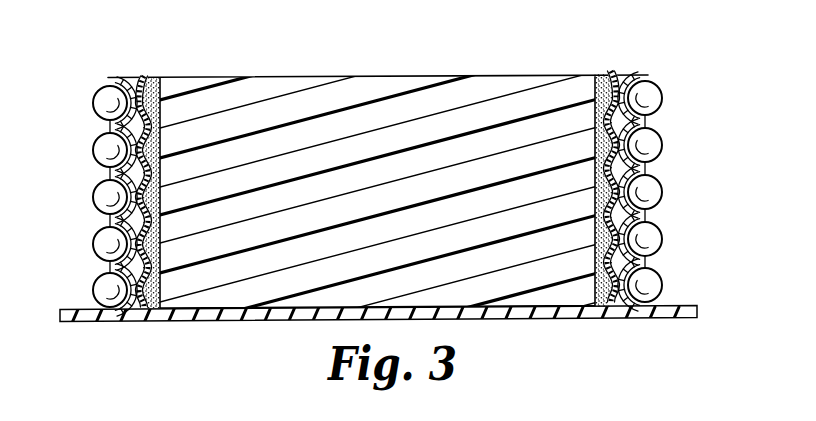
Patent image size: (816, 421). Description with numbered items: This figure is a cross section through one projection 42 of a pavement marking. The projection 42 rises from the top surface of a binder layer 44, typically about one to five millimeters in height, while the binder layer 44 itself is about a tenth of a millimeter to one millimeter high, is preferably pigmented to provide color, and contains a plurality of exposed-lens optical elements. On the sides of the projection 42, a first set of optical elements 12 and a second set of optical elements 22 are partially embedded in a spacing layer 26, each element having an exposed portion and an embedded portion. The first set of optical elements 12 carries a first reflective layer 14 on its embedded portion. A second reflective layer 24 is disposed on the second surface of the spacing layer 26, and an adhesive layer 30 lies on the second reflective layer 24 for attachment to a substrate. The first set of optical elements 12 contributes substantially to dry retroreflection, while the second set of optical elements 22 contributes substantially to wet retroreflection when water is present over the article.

The first set of optical elements 12 is at (97, 186).
The first reflective layer 14 is at (123, 78).
The adhesive layer 30 is at (153, 77).
The projection 42 is at (383, 89).
The second reflective layer 24 is at (598, 77).
The spacing layer 26 is at (624, 77).
The second set of optical elements 22 is at (654, 278).
The binder layer 44 is at (700, 310).